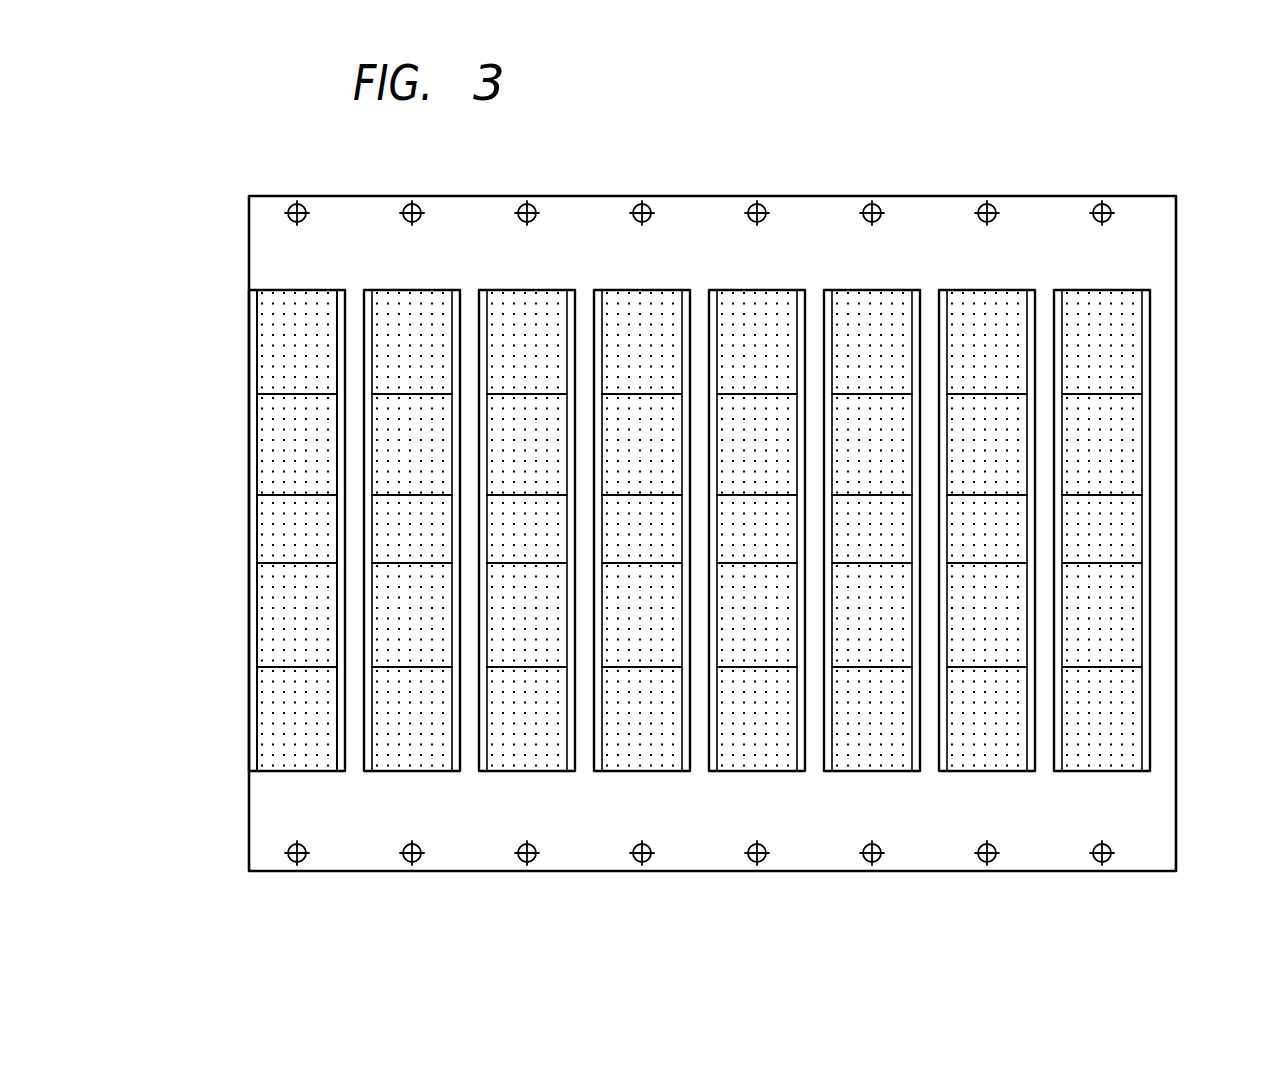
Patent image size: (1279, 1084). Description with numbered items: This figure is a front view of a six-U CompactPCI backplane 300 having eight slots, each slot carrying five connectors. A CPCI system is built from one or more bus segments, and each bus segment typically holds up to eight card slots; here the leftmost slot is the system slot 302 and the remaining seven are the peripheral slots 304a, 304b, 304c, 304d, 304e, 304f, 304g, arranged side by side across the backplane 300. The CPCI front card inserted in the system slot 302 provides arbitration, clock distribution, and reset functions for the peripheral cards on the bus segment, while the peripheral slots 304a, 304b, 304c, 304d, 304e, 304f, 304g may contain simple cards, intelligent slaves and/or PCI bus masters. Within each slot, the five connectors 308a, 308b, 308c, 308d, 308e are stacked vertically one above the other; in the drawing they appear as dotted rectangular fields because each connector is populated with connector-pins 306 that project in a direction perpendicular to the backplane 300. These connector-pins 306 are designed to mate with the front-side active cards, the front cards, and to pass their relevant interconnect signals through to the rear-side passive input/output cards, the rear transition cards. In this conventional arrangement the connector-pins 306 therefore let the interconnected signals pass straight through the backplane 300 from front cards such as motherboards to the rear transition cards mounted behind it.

The backplane 300 is at (1178, 233).
The system slot 302 is at (297, 290).
The peripheral slot 304a is at (385, 772).
The peripheral slot 304b is at (500, 772).
The peripheral slot 304c is at (615, 772).
The peripheral slot 304d is at (730, 772).
The peripheral slot 304e is at (845, 772).
The peripheral slot 304f is at (960, 772).
The peripheral slot 304g is at (1075, 772).
The connector-pins 306 is at (275, 563).
The connector 308a is at (250, 720).
The connector 308b is at (250, 643).
The connector 308c is at (256, 532).
The connector 308d is at (250, 417).
The connector 308e is at (248, 337).